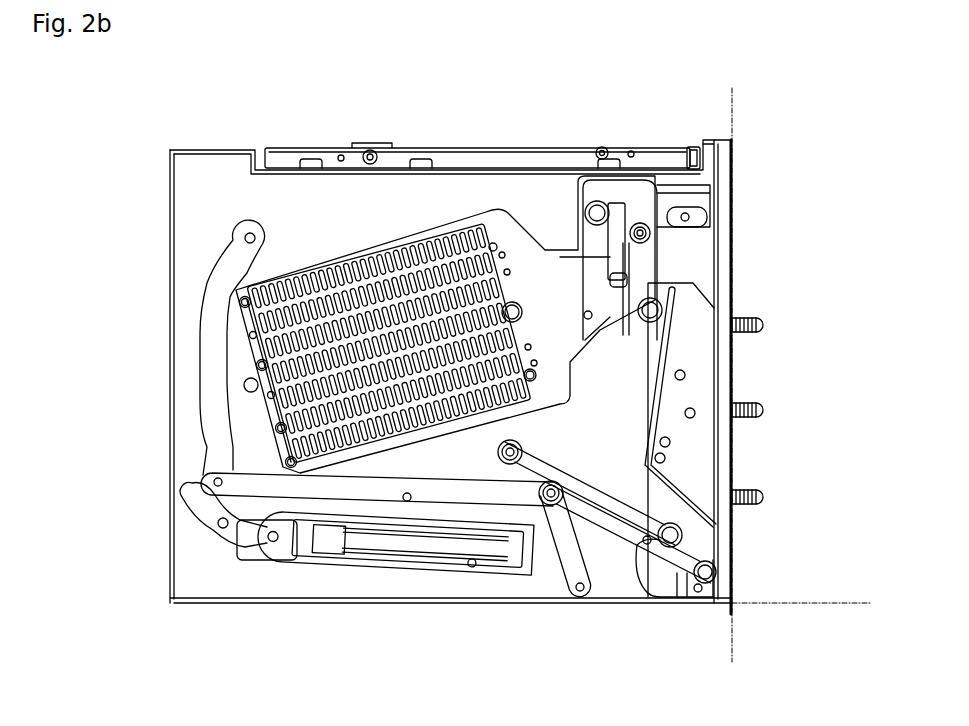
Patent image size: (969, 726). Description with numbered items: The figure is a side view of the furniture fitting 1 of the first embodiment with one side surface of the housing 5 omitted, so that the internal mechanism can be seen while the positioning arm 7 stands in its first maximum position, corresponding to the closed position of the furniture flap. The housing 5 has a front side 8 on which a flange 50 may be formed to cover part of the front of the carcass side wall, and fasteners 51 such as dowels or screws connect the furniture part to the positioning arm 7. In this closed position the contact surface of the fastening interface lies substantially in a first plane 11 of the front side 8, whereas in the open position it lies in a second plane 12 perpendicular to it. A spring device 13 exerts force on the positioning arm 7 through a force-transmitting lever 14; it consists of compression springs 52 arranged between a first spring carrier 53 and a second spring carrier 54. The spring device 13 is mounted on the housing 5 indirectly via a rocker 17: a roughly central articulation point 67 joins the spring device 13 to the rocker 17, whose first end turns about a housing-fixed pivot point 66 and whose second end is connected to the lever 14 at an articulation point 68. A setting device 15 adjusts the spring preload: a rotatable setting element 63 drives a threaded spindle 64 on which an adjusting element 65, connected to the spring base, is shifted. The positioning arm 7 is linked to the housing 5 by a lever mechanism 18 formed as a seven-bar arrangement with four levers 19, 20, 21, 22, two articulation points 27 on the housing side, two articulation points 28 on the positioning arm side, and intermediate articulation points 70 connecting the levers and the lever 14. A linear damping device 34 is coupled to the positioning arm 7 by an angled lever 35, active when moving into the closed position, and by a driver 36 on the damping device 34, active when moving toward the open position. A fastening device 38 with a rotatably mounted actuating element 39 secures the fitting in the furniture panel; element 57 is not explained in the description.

The furniture fitting 1 is at (258, 90).
The housing 5 is at (193, 196).
The positioning arm 7 is at (718, 355).
The front side 8 is at (742, 232).
The first plane 11 is at (735, 645).
The second plane 12 is at (803, 605).
The spring device 13 is at (418, 283).
The force-transmitting lever 14 is at (257, 488).
The setting device 15 is at (696, 260).
The rocker 17 is at (183, 345).
The lever mechanism 18 is at (614, 610).
The lever 19 is at (570, 568).
The lever 20 is at (657, 585).
The lever 21 is at (603, 560).
The lever 22 is at (613, 483).
The articulation points on the housing side 27 is at (698, 594).
The articulation points on the positioning arm side 28 is at (714, 566).
The damping device 34 is at (355, 597).
The angled lever 35 is at (203, 500).
The driver 36 is at (332, 480).
The fastening device 38 is at (478, 122).
The actuating element 39 is at (692, 150).
The flange 50 is at (722, 178).
The fasteners 51 is at (767, 500).
The springs 52 is at (323, 262).
The first spring carrier 53 is at (245, 353).
The second spring carrier 54 is at (528, 268).
The housing wall 57 is at (192, 177).
The setting element 63 is at (718, 191).
The threaded spindle 64 is at (640, 244).
The adjusting element 65 is at (610, 282).
The pivot point 66 is at (247, 238).
The articulation point 67 is at (250, 385).
The articulation point 68 is at (214, 482).
The intermediate articulation points 70 is at (556, 470).